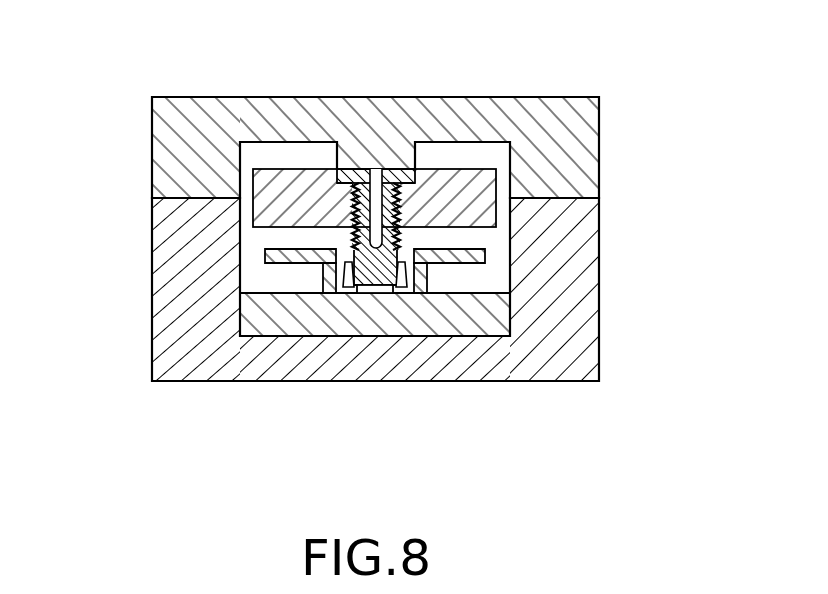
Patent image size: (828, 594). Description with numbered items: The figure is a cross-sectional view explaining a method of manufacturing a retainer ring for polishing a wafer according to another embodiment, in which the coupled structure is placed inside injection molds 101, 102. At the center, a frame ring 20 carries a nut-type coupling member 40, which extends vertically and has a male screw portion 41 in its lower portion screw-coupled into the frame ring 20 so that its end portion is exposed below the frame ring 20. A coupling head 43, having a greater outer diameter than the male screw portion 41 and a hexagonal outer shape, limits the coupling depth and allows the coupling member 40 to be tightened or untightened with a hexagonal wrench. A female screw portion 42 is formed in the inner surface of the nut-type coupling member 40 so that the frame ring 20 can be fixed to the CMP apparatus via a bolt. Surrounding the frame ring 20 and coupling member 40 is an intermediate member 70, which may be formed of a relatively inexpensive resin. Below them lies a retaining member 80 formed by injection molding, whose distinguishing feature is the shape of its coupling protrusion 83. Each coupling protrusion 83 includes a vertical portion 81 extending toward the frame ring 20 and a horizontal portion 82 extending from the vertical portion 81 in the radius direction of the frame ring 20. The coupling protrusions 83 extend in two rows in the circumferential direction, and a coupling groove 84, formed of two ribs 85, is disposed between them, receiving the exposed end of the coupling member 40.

The frame ring 20 is at (252, 210).
The nut-type coupling member 40 is at (496, 146).
The male screw portion 41 is at (403, 247).
The female screw portion 42 is at (378, 170).
The coupling head 43 is at (348, 170).
The intermediate member 70 is at (239, 146).
The retaining member 80 is at (333, 341).
The vertical portion 81 is at (325, 275).
The horizontal portion 82 is at (272, 256).
The coupling protrusion 83 is at (358, 377).
The coupling groove 84 is at (375, 293).
The rib 85 is at (344, 290).
The injection mold 101 is at (600, 147).
The injection mold 102 is at (600, 350).